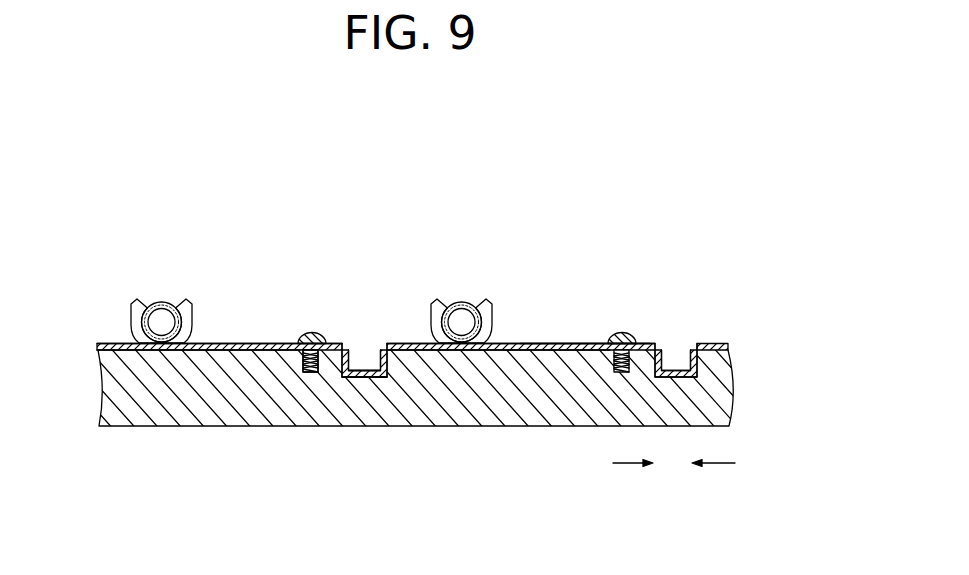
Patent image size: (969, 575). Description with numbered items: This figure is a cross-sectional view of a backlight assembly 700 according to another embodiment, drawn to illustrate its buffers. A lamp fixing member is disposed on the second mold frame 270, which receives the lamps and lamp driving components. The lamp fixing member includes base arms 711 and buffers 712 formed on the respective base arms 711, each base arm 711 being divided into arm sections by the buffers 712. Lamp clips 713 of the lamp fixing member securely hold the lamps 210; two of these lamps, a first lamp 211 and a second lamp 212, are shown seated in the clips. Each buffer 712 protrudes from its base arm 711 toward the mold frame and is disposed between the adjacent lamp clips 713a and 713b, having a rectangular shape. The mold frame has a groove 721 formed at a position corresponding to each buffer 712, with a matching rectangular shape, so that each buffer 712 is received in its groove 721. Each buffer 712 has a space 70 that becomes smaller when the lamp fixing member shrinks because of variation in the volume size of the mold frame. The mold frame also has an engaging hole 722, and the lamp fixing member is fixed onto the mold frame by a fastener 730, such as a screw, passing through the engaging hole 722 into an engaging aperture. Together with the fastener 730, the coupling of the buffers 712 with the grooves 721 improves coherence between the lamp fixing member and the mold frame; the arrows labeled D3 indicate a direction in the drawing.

The backlight assembly 700 is at (408, 131).
The second mold frame 270 is at (720, 392).
The lamp clips 713 is at (538, 511).
The lamp clip 713a is at (496, 350).
The lamp clip 713b is at (198, 350).
The space 70 is at (364, 353).
The groove 721 is at (381, 378).
The engaging hole 722 is at (320, 368).
The buffer 712 is at (679, 343).
The base arm 711 is at (534, 343).
The fastener 730 is at (314, 332).
The lamps 210 is at (485, 218).
The first lamp 211 is at (161, 301).
The second lamp 212 is at (461, 301).
The direction D3 is at (689, 465).